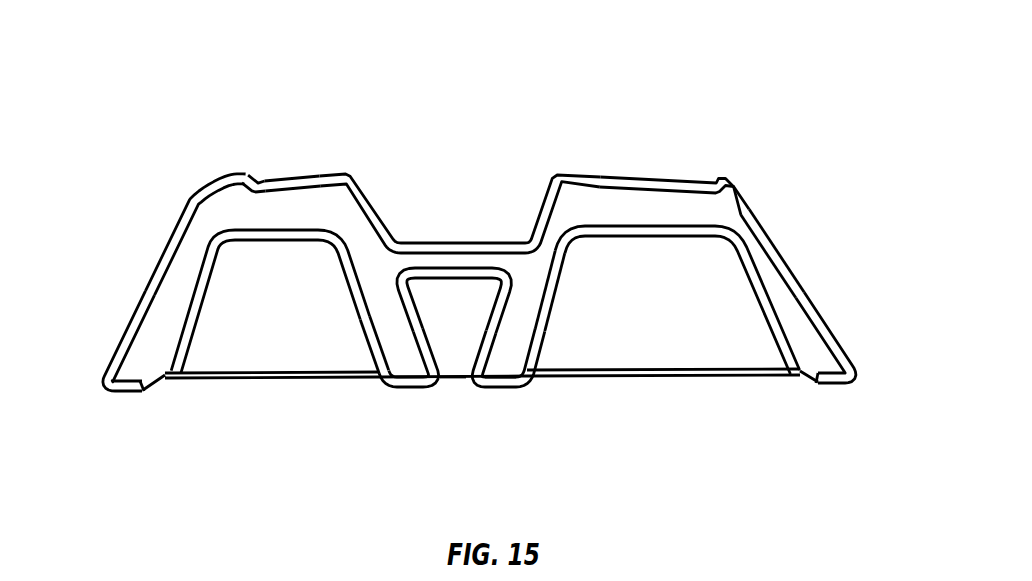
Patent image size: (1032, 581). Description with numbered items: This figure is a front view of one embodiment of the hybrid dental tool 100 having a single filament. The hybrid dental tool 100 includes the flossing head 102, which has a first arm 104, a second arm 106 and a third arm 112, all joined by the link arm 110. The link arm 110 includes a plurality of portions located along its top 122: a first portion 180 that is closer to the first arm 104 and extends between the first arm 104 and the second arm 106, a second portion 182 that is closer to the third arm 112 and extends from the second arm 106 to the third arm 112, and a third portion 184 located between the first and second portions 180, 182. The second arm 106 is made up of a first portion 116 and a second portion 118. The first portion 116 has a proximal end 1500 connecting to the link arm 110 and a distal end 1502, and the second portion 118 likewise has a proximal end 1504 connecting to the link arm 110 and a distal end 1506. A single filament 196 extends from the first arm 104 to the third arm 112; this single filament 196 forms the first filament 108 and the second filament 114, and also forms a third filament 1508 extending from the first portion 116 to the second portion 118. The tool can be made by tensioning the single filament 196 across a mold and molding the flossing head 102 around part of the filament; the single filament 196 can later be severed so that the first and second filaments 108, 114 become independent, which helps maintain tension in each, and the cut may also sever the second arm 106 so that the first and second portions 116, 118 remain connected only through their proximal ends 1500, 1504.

The hybrid dental tool 100 is at (706, 50).
The flossing head 102 is at (190, 204).
The first arm 104 is at (115, 357).
The second arm 106 is at (432, 426).
The first filament 108 is at (218, 381).
The link arm 110 is at (738, 208).
The third arm 112 is at (848, 367).
The second filament 114 is at (653, 376).
The first portion of the second arm 116 is at (393, 343).
The second portion of the second arm 118 is at (526, 318).
The top of the link arm 122 is at (232, 153).
The first portion of the link arm 180 is at (284, 182).
The second portion of the link arm 182 is at (613, 178).
The third portion of the link arm 184 is at (448, 241).
The single filament 196 is at (505, 417).
The proximal end of the first portion 1500 is at (320, 270).
The distal end of the first portion 1502 is at (397, 390).
The proximal end of the second portion 1504 is at (582, 256).
The distal end of the second portion 1506 is at (513, 387).
The third filament 1508 is at (457, 383).